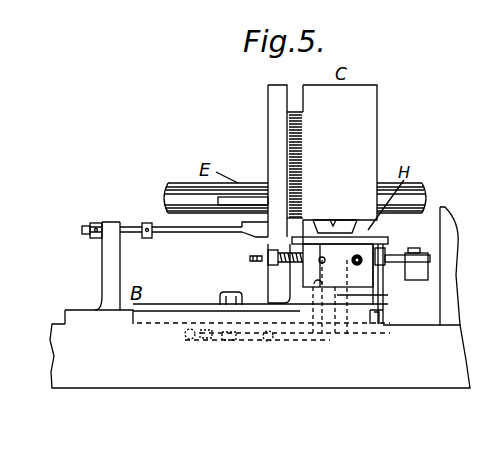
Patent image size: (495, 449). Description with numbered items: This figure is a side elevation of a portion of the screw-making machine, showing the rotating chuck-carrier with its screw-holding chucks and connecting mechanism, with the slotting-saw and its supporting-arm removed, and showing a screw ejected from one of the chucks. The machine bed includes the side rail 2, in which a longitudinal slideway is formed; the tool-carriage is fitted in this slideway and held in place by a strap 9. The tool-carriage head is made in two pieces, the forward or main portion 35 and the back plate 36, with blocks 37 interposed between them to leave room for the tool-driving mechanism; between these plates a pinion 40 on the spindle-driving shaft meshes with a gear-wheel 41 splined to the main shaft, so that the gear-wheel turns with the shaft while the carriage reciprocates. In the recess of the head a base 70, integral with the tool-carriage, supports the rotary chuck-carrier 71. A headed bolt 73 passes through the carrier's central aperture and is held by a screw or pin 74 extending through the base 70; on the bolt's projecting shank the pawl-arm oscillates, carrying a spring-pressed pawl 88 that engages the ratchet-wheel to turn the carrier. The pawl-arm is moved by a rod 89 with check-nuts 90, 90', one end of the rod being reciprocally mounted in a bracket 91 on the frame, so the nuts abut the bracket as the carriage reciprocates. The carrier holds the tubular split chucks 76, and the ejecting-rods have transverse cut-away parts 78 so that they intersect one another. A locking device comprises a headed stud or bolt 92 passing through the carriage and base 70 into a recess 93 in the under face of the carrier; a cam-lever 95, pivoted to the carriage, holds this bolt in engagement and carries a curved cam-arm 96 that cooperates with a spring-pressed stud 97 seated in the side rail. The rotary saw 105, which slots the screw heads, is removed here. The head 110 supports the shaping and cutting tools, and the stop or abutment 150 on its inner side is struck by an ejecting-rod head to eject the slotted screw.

The side rail 2 is at (60, 350).
The strap 9 is at (170, 299).
The forward or main portion of tool-carriage head 35 is at (376, 104).
The back plate 36 is at (267, 102).
The blocks 37 is at (295, 92).
The pinion 40 is at (304, 132).
The gear-wheel 41 is at (305, 187).
The base 70 is at (357, 296).
The rotary chuck-carrier 71 is at (366, 251).
The headed bolt 73 is at (340, 275).
The screw or pin 74 is at (376, 297).
The tubular split chuck 76 is at (270, 258).
The transverse guideway or cut-away part 78 is at (315, 445).
The spring-pressed pawl 88 is at (239, 445).
The rod 89 is at (210, 234).
The check-nut 90 is at (82, 249).
The check-nut 90' is at (150, 249).
The bracket 91 is at (108, 283).
The headed stud or bolt 92 is at (318, 320).
The recess 93 is at (318, 280).
The cam-lever 95 is at (186, 328).
The curved cam-arm 96 is at (228, 344).
The spring-pressed stud 97 is at (204, 344).
The rotary saw 105 is at (310, 220).
The head 110 is at (398, 266).
The stop or abutment 150 is at (400, 268).